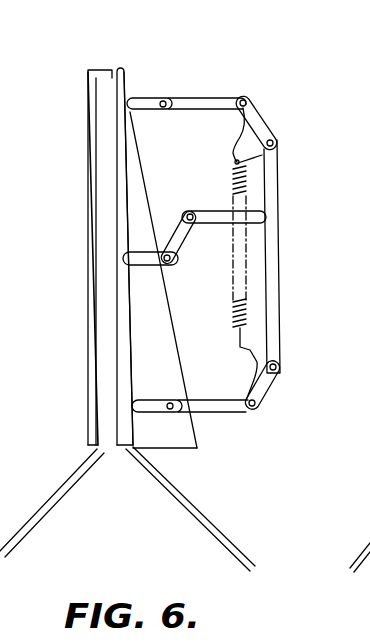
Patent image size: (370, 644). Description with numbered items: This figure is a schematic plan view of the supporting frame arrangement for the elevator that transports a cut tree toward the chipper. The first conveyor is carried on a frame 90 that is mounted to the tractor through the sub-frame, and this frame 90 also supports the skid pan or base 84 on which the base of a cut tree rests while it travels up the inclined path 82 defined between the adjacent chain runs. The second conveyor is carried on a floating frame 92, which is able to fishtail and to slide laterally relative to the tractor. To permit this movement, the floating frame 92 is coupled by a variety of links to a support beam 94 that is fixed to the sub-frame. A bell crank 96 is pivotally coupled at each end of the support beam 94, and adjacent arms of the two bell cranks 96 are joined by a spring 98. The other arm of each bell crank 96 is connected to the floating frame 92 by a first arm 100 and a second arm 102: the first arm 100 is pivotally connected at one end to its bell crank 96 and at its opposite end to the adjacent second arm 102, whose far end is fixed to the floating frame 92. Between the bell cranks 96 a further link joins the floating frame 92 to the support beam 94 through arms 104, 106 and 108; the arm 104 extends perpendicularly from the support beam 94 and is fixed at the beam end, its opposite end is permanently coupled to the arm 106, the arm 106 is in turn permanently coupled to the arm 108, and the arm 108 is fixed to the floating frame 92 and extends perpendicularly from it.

The inclined path 82 is at (109, 188).
The skid pan or base 84 is at (108, 450).
The frame 90 is at (88, 157).
The floating frame 92 is at (122, 253).
The support beam 94 is at (275, 268).
The bell crank 96 is at (258, 120).
The spring 98 is at (245, 303).
The first arm 100 is at (207, 97).
The second arm 102 is at (152, 93).
The arm 104 is at (212, 211).
The arm 106 is at (180, 242).
The arm 108 is at (143, 259).